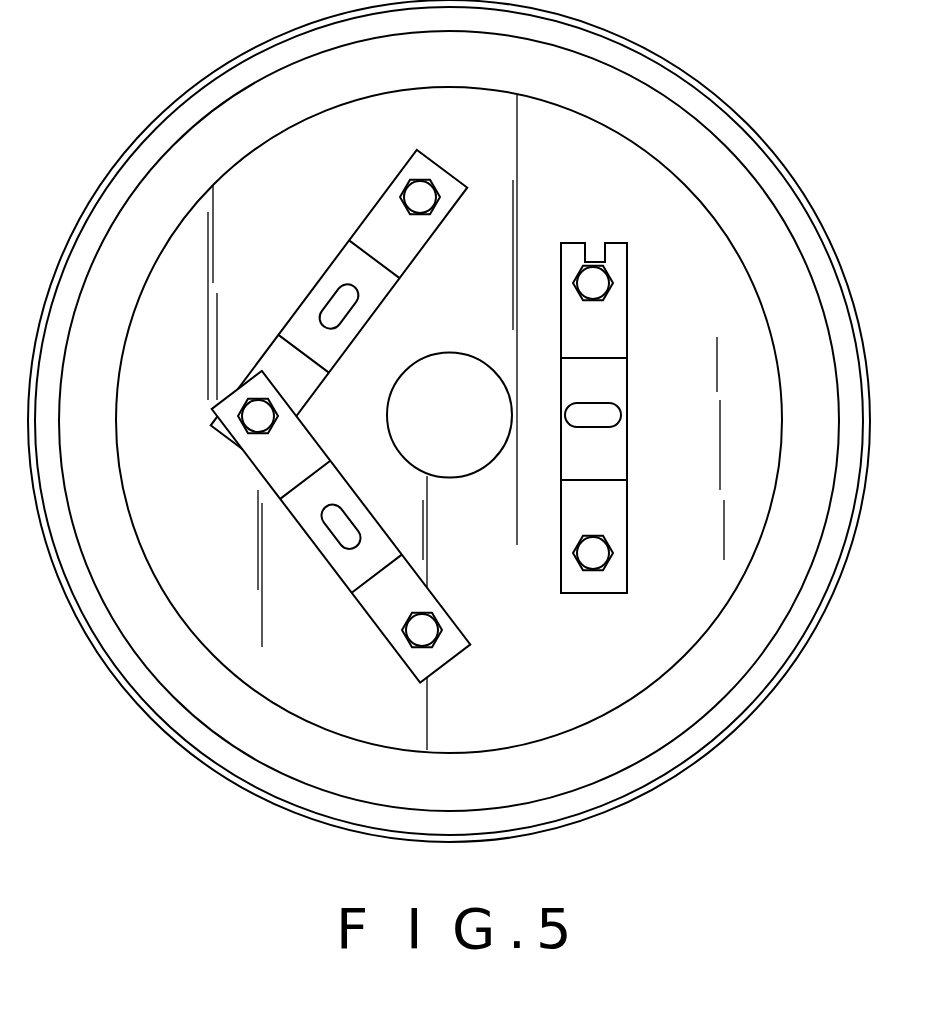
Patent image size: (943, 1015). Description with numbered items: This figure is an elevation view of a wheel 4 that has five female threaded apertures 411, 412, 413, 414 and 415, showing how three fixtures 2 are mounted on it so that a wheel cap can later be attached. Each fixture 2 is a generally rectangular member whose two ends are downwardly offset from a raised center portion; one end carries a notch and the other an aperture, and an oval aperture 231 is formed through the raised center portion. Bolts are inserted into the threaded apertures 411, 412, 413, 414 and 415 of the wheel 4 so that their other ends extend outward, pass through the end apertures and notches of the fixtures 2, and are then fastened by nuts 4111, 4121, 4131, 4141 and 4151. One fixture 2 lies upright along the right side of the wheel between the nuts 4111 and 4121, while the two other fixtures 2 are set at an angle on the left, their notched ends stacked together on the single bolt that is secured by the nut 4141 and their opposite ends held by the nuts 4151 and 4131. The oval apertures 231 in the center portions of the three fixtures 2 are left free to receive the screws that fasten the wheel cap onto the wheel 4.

The fixture 2 is at (436, 175).
The wheel 4 is at (699, 113).
The oval aperture 231 is at (324, 296).
The nut 4151 is at (405, 190).
The aperture 415 is at (369, 194).
The nut 4141 is at (247, 413).
The aperture 414 is at (218, 448).
The nut 4131 is at (432, 629).
The aperture 413 is at (490, 630).
The nut 4111 is at (606, 282).
The aperture 411 is at (641, 293).
The nut 4121 is at (604, 554).
The aperture 412 is at (631, 563).